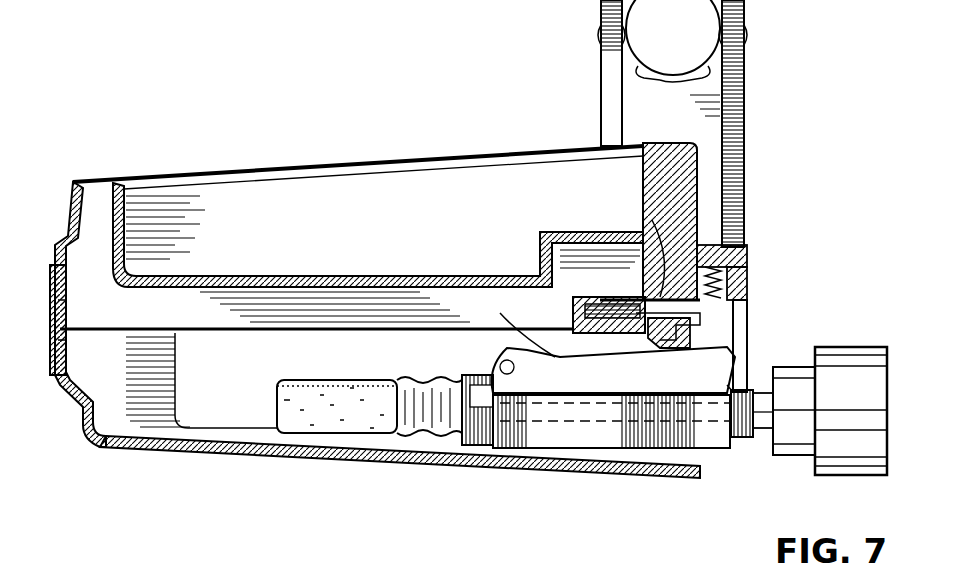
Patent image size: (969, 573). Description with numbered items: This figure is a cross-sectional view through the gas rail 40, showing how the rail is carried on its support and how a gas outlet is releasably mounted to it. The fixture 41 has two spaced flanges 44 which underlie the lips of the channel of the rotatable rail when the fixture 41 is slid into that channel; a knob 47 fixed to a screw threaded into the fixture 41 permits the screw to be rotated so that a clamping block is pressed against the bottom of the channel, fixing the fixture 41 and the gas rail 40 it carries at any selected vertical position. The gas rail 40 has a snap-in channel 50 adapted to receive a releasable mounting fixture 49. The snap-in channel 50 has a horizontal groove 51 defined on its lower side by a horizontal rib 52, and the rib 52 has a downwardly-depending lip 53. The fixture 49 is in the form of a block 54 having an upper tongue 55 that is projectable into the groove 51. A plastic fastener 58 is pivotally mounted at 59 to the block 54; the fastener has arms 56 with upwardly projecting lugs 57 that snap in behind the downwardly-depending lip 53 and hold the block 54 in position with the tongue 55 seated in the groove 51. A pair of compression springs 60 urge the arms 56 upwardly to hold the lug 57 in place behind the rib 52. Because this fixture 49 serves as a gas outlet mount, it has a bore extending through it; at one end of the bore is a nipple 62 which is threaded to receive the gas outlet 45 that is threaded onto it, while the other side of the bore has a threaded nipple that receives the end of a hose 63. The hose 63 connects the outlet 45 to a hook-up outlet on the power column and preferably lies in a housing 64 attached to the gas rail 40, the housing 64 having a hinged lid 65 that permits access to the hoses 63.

The gas rail 40 is at (312, 160).
The fixture 41 is at (746, 80).
The flanges 44 is at (605, 72).
The gas outlet 45 is at (845, 346).
The knob 47 is at (682, 44).
The releasable mounting fixture 49 is at (738, 452).
The snap-in channel 50 is at (643, 236).
The horizontal groove 51 is at (572, 308).
The horizontal rib 52 is at (615, 350).
The downwardly-depending lip 53 is at (680, 348).
The block 54 is at (555, 445).
The upper tongue 55 is at (608, 280).
The arms 56 is at (507, 326).
The lugs 57 is at (640, 340).
The plastic fastener 58 is at (750, 346).
The pivot 59 is at (498, 365).
The compression springs 60 is at (748, 262).
The nipple 62 is at (768, 430).
The hose 63 is at (345, 380).
The housing 64 is at (172, 178).
The hinged lid 65 is at (188, 452).